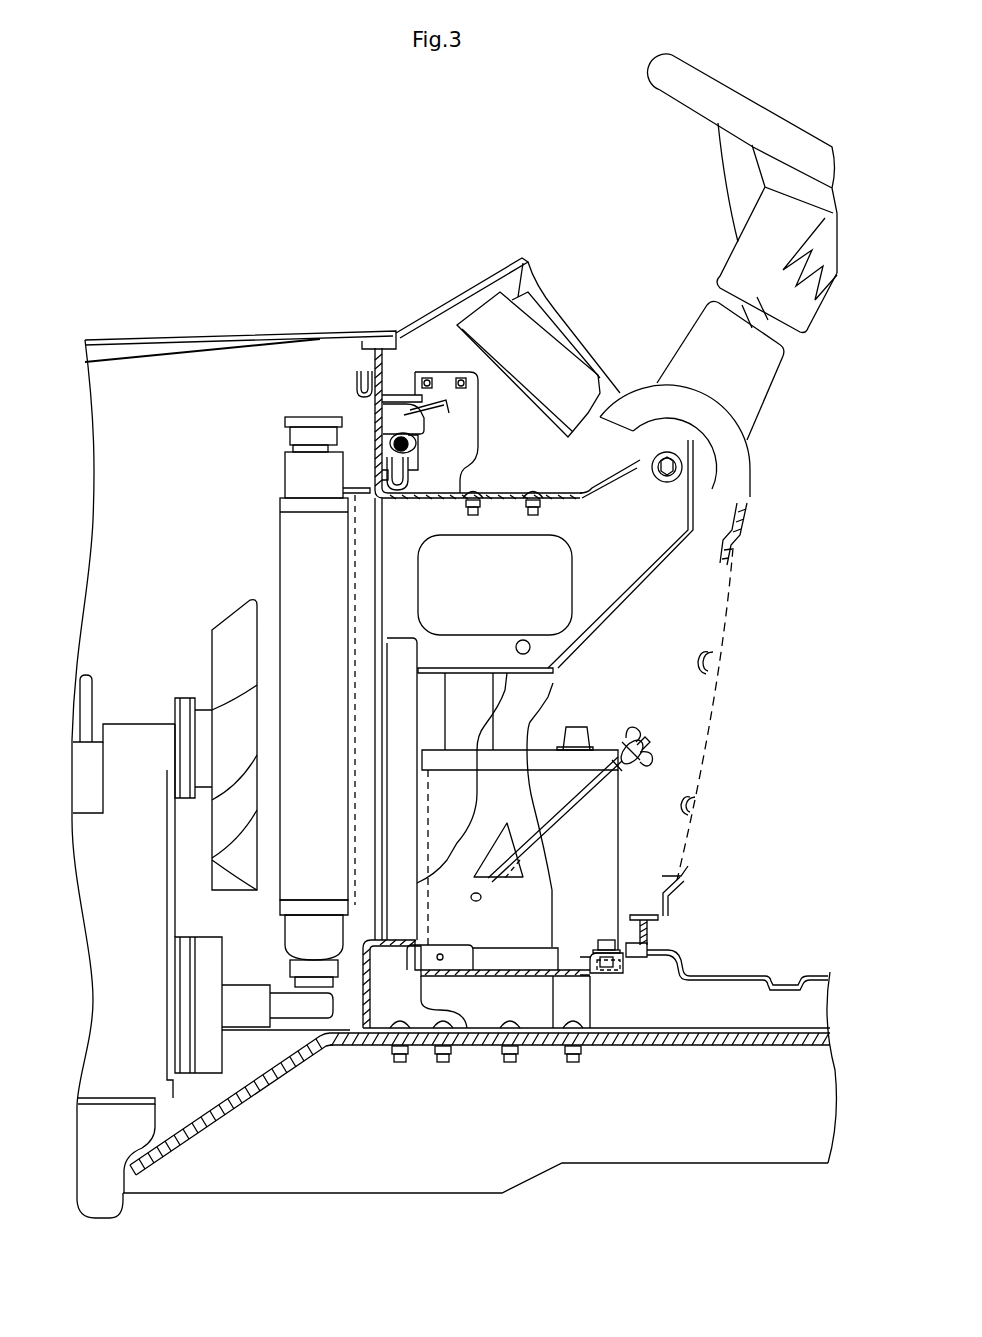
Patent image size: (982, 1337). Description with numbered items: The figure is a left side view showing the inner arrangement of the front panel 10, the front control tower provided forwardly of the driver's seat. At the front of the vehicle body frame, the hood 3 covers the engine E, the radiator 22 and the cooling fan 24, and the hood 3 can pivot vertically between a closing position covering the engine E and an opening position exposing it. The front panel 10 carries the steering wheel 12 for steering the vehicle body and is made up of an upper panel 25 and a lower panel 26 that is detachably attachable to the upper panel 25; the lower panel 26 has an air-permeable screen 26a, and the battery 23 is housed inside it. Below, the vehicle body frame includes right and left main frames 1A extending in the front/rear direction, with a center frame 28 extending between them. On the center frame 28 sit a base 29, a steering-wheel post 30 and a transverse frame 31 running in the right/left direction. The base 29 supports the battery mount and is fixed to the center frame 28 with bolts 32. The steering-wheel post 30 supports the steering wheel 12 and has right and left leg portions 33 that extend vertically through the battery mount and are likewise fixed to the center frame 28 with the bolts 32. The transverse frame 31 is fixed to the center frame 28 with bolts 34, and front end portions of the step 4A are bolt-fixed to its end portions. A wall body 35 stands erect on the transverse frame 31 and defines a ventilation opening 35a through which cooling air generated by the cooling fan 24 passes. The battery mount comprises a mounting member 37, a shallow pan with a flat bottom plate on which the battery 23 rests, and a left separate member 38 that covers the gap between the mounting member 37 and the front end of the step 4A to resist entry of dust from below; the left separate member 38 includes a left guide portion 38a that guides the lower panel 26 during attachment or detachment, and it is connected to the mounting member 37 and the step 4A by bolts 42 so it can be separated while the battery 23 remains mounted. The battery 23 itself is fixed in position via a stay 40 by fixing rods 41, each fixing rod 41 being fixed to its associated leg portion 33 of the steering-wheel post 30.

The main frame 1A is at (528, 1167).
The hood 3 is at (152, 338).
The step 4A is at (764, 975).
The front panel 10 is at (521, 254).
The steering wheel 12 is at (748, 105).
The radiator 22 is at (280, 485).
The battery 23 is at (618, 824).
The cooling fan 24 is at (228, 624).
The upper panel 25 is at (458, 295).
The lower panel 26 is at (750, 532).
The air-permeable screen 26a is at (717, 690).
The center frame 28 is at (713, 1047).
The base 29 is at (588, 1000).
The steering-wheel post 30 is at (562, 670).
The transverse frame 31 is at (362, 1010).
The bolt 32 is at (510, 1064).
The leg portion 33 is at (543, 856).
The bolt 34 is at (400, 1064).
The wall body 35 is at (372, 420).
The ventilation opening 35a is at (388, 586).
The mounting member 37 is at (612, 972).
The left separate member 38 is at (518, 967).
The left guide portion 38a is at (650, 950).
The stay 40 is at (642, 762).
The fixing rod 41 is at (597, 780).
The bolt 42 is at (606, 938).
The engine E is at (142, 722).